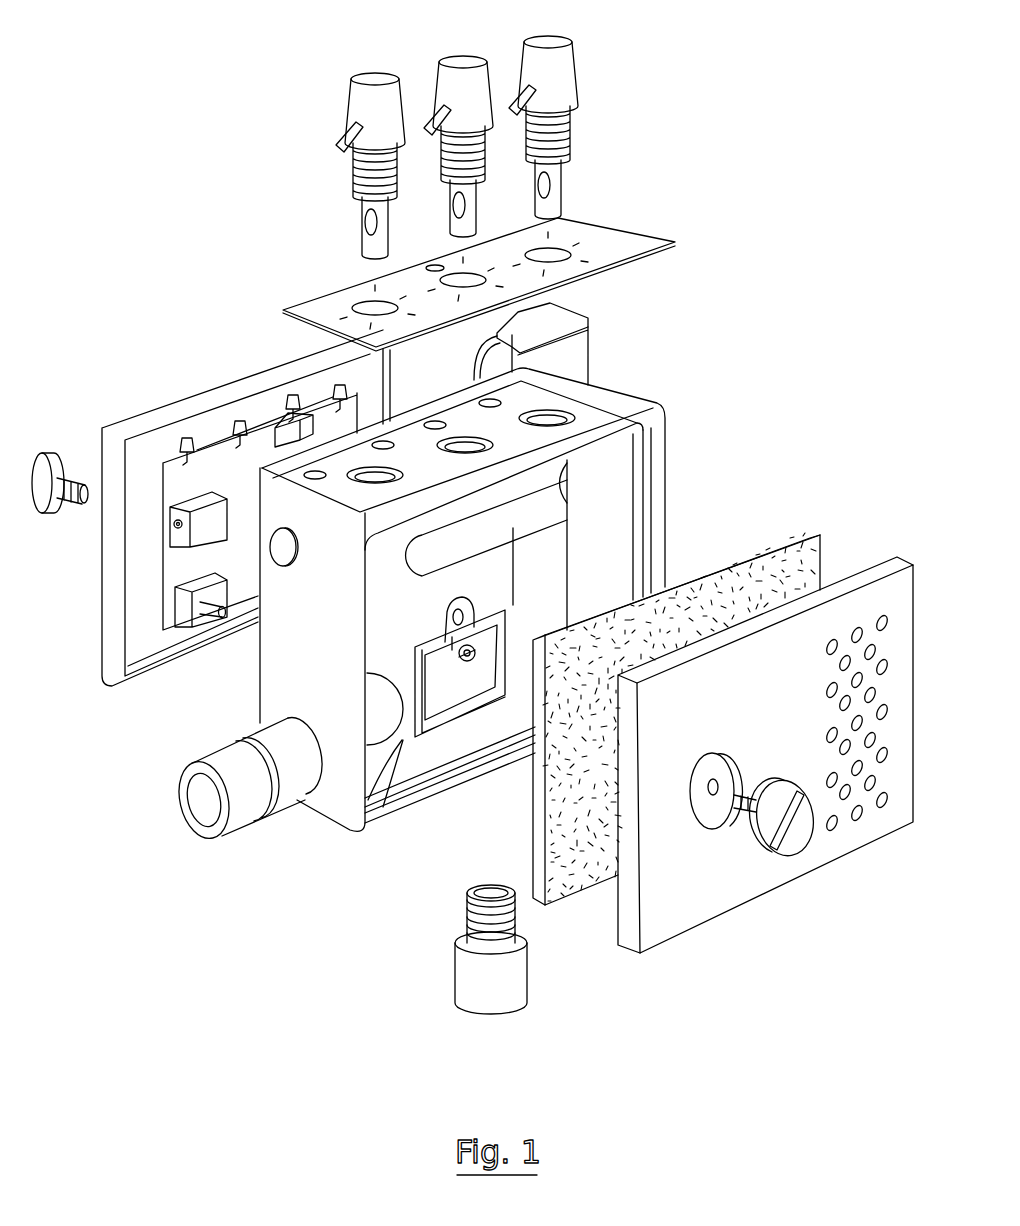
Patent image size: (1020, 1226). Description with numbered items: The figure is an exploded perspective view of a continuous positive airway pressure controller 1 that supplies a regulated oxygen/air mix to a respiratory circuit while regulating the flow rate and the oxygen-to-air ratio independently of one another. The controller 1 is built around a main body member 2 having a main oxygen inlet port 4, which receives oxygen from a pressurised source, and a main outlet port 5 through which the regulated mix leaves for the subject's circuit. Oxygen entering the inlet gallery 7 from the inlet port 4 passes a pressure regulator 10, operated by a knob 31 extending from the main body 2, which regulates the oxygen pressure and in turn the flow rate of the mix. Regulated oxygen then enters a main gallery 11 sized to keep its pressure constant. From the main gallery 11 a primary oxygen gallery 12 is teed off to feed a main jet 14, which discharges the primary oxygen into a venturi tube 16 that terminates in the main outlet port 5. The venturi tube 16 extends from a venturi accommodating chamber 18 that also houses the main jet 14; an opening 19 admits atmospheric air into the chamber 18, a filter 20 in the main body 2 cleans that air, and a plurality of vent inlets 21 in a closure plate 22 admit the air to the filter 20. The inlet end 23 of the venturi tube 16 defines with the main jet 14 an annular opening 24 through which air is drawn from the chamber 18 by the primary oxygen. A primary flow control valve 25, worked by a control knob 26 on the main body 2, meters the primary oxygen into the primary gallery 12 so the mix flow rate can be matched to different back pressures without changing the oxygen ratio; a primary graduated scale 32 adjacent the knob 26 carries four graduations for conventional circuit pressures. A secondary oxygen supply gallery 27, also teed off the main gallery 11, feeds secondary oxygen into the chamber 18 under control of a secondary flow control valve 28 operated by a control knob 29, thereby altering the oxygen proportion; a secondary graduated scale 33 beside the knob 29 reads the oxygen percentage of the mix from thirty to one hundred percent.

The continuous positive airway pressure controller 1 is at (742, 228).
The main body member 2 is at (665, 437).
The main oxygen inlet port 4 is at (472, 977).
The main outlet port 5 is at (248, 808).
The inlet gallery 7 is at (563, 522).
The pressure regulator 10 is at (570, 142).
The main gallery 11 is at (533, 502).
The primary oxygen gallery 12 is at (487, 567).
The main jet 14 is at (513, 615).
The venturi tube 16 is at (383, 807).
The venturi accommodating chamber 18 is at (445, 707).
The opening 19 is at (462, 700).
The filter 20 is at (800, 522).
The vent inlets 21 is at (857, 627).
The closure plate 22 is at (767, 887).
The inlet end 23 is at (466, 675).
The annular opening 24 is at (452, 637).
The primary flow control valve 25 is at (480, 152).
The control knob 26 is at (460, 57).
The secondary oxygen supply gallery 27 is at (397, 603).
The secondary flow control valve 28 is at (355, 178).
The control knob 29 is at (368, 103).
The knob 31 is at (563, 67).
The primary graduated scale 32 is at (462, 266).
The secondary graduated scale 33 is at (345, 300).